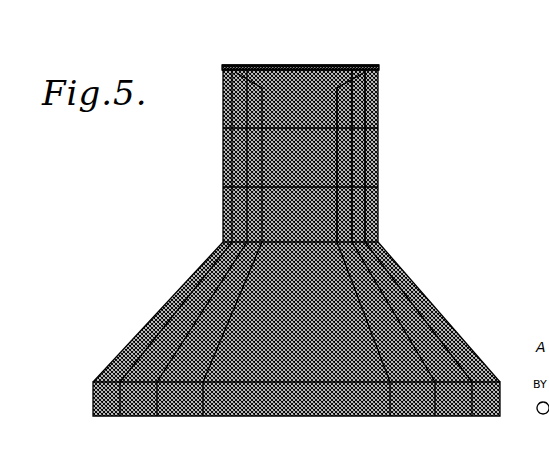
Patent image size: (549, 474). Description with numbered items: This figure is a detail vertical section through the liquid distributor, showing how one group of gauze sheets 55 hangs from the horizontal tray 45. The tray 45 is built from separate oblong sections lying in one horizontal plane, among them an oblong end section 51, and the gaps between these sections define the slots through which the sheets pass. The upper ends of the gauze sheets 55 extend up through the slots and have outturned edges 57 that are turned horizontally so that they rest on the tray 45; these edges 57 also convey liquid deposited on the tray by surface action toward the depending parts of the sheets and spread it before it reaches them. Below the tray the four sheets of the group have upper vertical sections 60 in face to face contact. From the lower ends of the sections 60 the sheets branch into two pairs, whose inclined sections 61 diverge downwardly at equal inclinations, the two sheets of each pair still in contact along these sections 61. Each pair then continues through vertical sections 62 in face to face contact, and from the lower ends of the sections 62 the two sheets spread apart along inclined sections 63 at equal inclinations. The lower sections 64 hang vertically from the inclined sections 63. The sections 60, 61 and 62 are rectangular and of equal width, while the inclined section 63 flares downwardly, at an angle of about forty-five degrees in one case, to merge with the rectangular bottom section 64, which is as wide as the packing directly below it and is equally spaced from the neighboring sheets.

The horizontal tray 45 is at (379, 68).
The oblong end section of tray 51 is at (306, 68).
The gauze sheet 55 is at (337, 165).
The outturned upper edge 57 is at (376, 66).
The upper vertical section 60 is at (223, 102).
The inclined upper branch section 61 is at (223, 160).
The vertical section of branch pair 62 is at (223, 212).
The inclined flaring section 63 is at (177, 292).
The lower vertical bottom section 64 is at (93, 408).